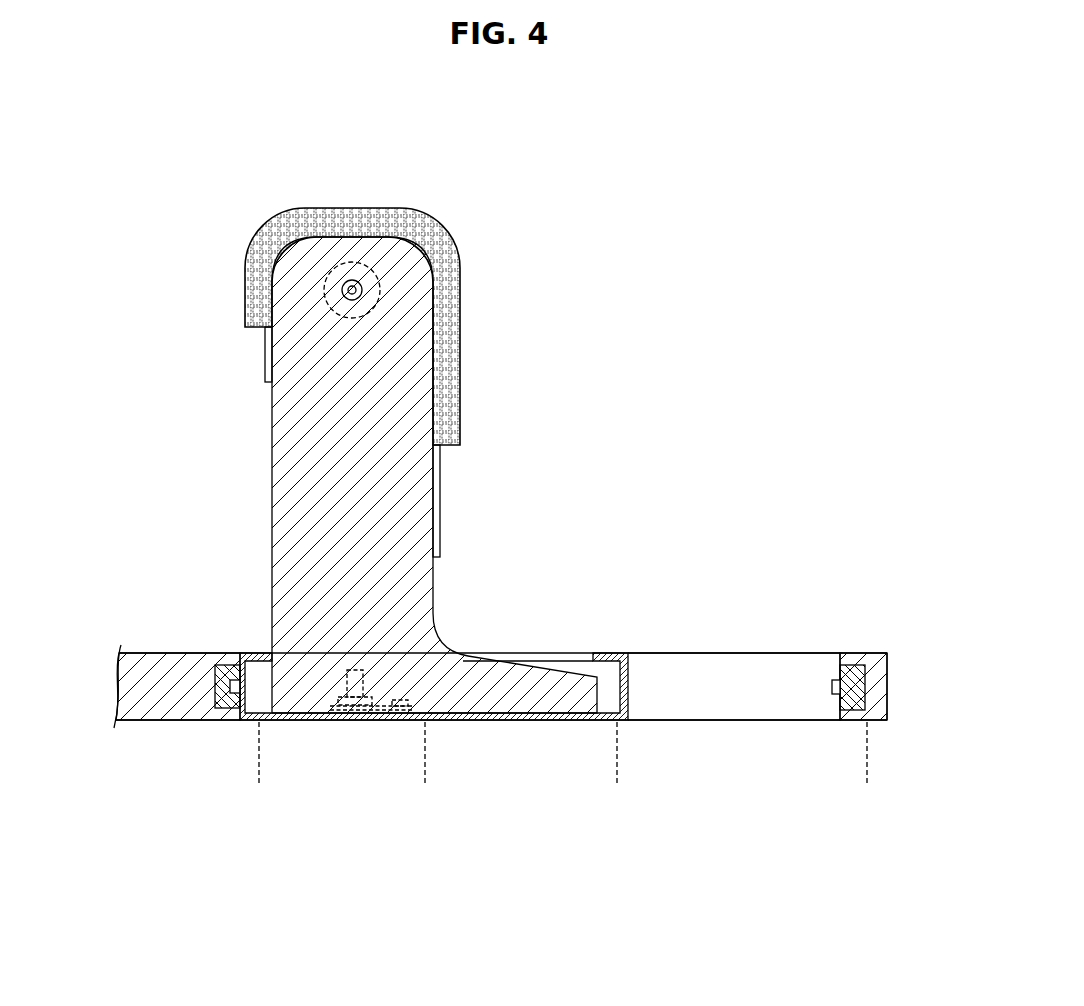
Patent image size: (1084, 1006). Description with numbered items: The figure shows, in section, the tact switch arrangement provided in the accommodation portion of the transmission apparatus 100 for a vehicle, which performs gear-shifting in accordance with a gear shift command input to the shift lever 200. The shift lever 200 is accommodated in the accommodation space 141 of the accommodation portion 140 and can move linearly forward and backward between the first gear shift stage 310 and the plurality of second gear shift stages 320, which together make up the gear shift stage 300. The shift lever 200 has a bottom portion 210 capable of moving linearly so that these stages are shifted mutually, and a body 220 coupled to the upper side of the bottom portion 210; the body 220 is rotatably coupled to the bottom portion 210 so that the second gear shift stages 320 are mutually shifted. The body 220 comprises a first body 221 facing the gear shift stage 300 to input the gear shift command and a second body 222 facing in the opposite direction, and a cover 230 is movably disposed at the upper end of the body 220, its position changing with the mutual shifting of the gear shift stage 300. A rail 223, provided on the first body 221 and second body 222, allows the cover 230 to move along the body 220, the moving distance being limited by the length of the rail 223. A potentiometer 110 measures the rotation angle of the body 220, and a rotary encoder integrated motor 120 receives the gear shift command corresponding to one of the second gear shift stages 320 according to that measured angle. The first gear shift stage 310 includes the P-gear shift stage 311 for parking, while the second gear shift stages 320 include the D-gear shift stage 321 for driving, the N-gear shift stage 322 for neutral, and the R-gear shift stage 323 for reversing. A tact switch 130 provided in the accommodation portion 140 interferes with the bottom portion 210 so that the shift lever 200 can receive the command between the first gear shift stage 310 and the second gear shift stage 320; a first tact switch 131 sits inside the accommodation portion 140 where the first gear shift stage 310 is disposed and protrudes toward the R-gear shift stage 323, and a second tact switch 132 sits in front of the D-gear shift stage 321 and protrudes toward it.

The transmission apparatus for a vehicle 100 is at (160, 189).
The potentiometer 110 is at (372, 722).
The rotary encoder integrated motor 120 is at (352, 262).
The tact switch 130 is at (530, 725).
The first tact switch 131 is at (842, 704).
The second tact switch 132 is at (232, 702).
The accommodation portion 140 is at (860, 653).
The accommodation space 141 is at (738, 680).
The shift lever 200 is at (128, 290).
The bottom portion 210 is at (256, 655).
The body 220 is at (180, 425).
The first body 221 is at (452, 512).
The second body 222 is at (272, 427).
The rail 223 is at (442, 462).
The cover 230 is at (254, 285).
The gear shift stage 300 is at (883, 882).
The first gear shift stage 310 is at (878, 803).
The P-gear shift stage 311 is at (866, 808).
The second gear shift stage 320 is at (255, 841).
The D-gear shift stage 321 is at (258, 806).
The N-gear shift stage 322 is at (424, 806).
The R-gear shift stage 323 is at (616, 806).